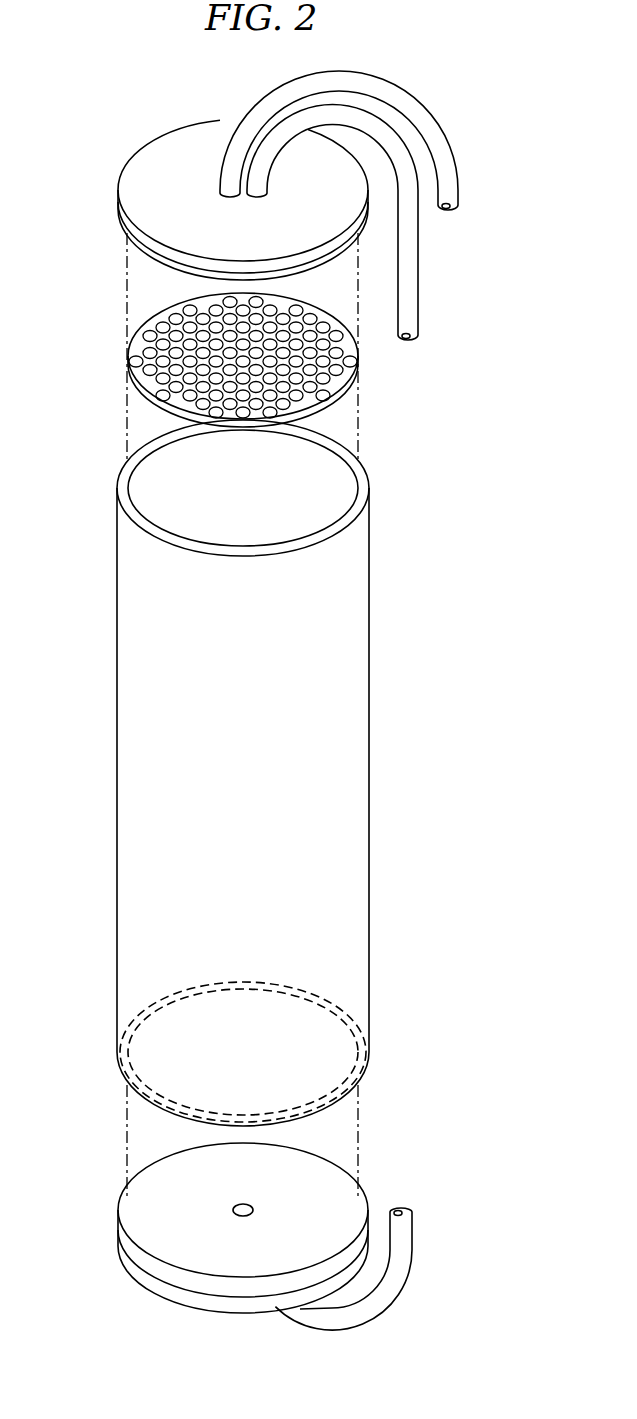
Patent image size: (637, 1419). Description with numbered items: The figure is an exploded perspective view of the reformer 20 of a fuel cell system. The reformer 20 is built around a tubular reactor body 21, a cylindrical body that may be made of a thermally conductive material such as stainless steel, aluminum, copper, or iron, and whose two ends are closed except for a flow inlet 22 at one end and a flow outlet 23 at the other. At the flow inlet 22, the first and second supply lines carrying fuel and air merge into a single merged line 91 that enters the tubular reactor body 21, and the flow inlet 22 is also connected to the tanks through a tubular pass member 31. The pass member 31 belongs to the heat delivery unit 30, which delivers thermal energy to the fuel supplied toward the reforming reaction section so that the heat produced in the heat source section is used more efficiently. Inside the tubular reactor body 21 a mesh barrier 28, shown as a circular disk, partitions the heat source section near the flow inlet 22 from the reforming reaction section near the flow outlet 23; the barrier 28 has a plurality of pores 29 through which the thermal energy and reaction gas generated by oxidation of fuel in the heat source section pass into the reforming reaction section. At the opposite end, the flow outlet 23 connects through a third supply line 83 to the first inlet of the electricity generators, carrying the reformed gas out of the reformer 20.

The reformer 20 is at (107, 70).
The tubular reactor body 21 is at (355, 733).
The flow inlet 22 is at (150, 170).
The flow outlet 23 is at (132, 1255).
The mesh barrier 28 is at (140, 404).
The pores 29 is at (158, 349).
The heat delivery unit 30 is at (428, 252).
The tubular pass member 31 is at (410, 297).
The third supply line 83 is at (400, 1267).
The merged line 91 is at (417, 113).